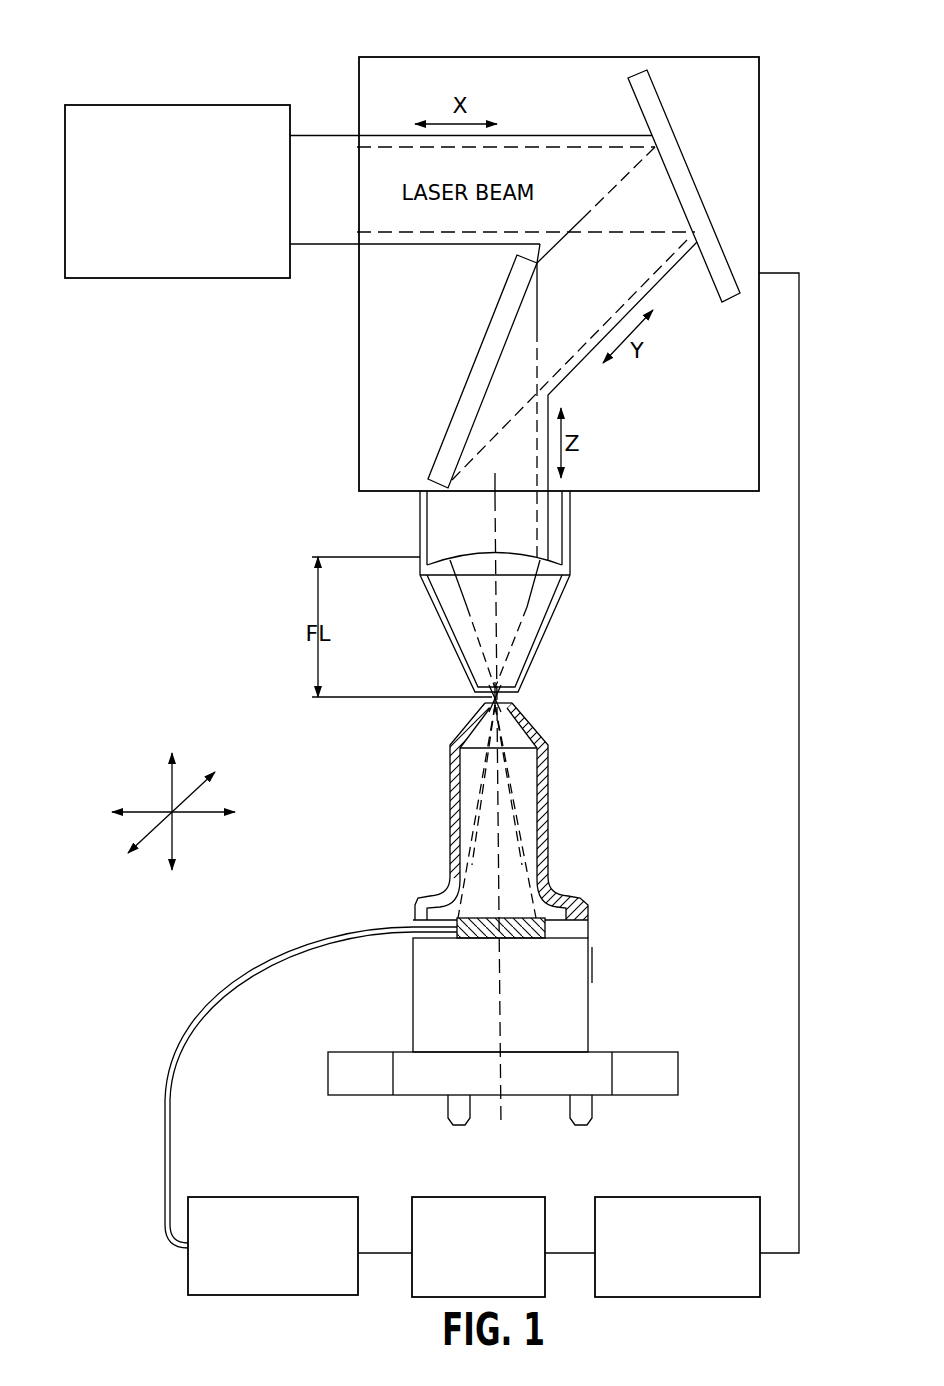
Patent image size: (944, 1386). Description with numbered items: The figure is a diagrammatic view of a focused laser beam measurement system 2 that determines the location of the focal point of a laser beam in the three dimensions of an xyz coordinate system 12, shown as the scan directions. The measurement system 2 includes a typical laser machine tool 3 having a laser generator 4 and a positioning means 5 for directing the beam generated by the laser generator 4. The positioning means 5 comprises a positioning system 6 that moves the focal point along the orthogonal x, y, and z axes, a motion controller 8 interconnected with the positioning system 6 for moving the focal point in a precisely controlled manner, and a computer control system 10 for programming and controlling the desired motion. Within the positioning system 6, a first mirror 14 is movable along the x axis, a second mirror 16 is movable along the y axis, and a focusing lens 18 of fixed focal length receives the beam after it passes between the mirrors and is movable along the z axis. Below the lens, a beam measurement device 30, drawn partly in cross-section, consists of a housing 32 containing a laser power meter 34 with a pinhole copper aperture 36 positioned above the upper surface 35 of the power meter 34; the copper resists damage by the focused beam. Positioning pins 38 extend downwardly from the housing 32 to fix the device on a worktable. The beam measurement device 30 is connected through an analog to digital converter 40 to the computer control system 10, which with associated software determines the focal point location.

The measurement system 2 is at (198, 623).
The laser machine tool 3 is at (568, 42).
The laser generator 4 is at (158, 118).
The positioning means 5 is at (770, 602).
The positioning system 6 is at (606, 68).
The motion controller 8 is at (682, 1197).
The computer control system 10 is at (455, 1197).
The xyz coordinate system 12 is at (120, 832).
The first mirror 14 is at (712, 213).
The second mirror 16 is at (492, 312).
The focusing lens 18 is at (556, 556).
The beam measurement device 30 is at (580, 761).
The housing 32 is at (567, 897).
The laser power meter 34 is at (527, 938).
The upper surface 35 is at (483, 917).
The pinhole copper aperture 36 is at (500, 704).
The positioning pins 38 is at (455, 1108).
The analog to digital converter 40 is at (267, 1197).